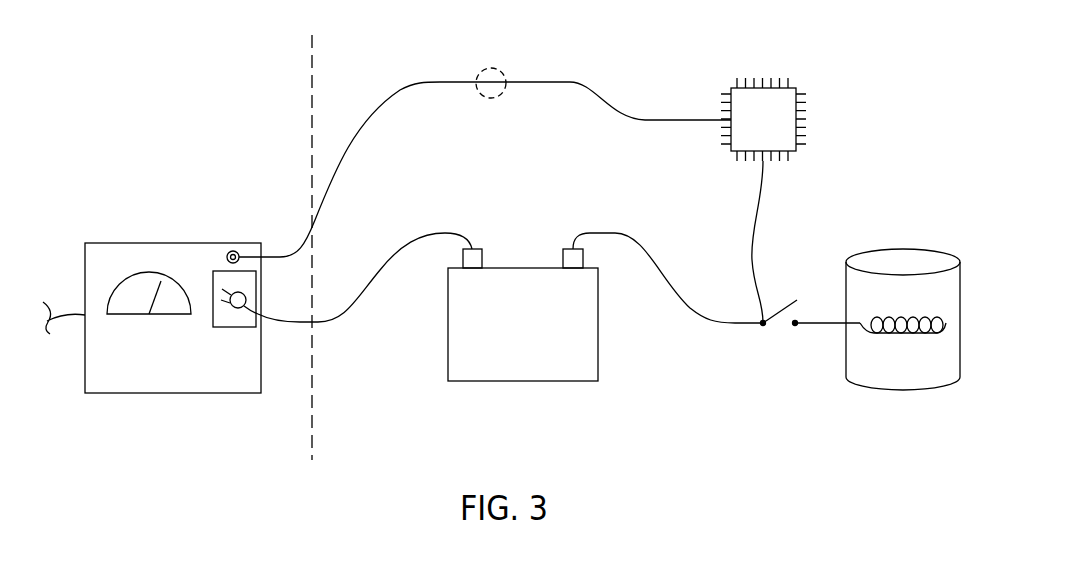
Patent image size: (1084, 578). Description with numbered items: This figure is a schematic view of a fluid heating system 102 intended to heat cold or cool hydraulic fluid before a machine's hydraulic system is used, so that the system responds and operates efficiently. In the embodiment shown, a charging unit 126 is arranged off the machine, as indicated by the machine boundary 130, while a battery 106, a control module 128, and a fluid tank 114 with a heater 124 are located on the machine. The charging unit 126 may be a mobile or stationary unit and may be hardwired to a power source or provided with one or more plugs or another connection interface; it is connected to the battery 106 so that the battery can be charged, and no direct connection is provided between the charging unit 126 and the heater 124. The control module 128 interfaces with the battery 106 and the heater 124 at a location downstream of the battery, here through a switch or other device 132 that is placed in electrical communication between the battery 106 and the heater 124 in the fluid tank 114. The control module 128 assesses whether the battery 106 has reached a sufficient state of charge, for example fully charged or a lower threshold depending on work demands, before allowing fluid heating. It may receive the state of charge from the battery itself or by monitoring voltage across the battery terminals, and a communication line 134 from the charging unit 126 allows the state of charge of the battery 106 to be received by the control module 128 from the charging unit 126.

The fluid heating system 102 is at (137, 58).
The battery 106 is at (522, 381).
The fluid tank 114 is at (902, 248).
The heater 124 is at (892, 332).
The charging unit 126 is at (173, 242).
The control module 128 is at (768, 120).
The machine boundary 130 is at (313, 70).
The switch or other device 132 is at (774, 337).
The communication line 134 is at (492, 68).